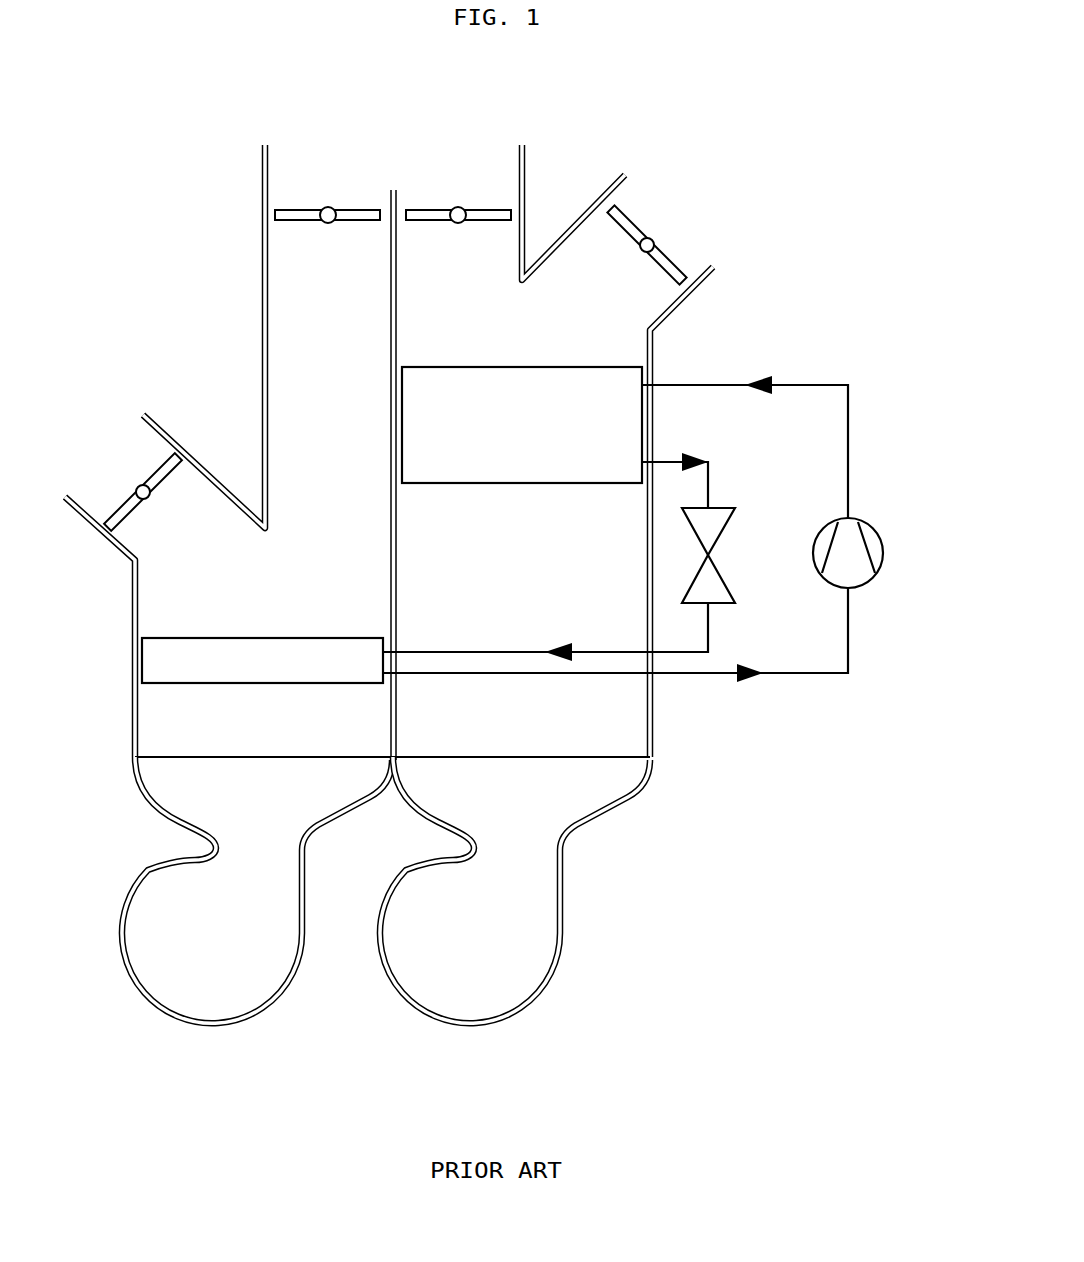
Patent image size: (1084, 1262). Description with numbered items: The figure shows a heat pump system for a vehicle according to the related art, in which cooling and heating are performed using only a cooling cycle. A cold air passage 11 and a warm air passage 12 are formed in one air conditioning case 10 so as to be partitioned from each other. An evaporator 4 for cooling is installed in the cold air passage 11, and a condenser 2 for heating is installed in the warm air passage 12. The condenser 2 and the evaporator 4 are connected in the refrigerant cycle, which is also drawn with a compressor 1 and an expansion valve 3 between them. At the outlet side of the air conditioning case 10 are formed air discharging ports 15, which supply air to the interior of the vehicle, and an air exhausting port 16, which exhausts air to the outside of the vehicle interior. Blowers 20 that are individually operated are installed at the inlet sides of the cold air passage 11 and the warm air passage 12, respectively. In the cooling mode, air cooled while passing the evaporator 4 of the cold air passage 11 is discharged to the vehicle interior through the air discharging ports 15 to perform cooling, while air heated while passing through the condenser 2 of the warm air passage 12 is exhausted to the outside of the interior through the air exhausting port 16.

The compressor 1 is at (885, 548).
The condenser 2 is at (602, 377).
The expansion valve 3 is at (727, 532).
The evaporator 4 is at (178, 677).
The air conditioning case 10 is at (664, 736).
The cold air passage 11 is at (227, 620).
The warm air passage 12 is at (547, 587).
The air discharging ports 15 is at (327, 188).
The air exhausting port 16 is at (668, 225).
The blowers 20 is at (213, 1025).